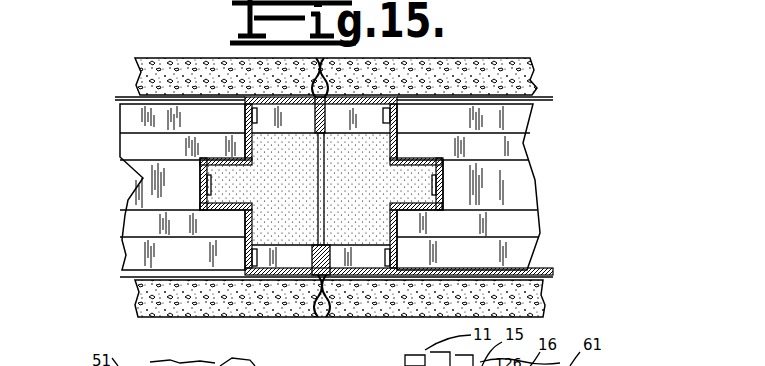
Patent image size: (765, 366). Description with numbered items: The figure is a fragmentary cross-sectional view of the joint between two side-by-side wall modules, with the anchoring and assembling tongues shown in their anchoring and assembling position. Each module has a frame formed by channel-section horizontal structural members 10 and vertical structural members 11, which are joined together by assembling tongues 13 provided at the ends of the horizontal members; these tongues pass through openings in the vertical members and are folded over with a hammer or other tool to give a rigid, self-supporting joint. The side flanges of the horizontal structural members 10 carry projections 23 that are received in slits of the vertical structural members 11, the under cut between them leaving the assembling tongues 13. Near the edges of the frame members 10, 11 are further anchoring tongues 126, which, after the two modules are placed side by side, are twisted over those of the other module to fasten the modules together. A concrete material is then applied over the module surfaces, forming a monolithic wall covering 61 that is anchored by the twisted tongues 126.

The horizontal structural member 10 is at (520, 121).
The vertical structural member 11 is at (403, 158).
The assembling tongue 13 is at (387, 120).
The projection 23 is at (340, 257).
The wall covering of concrete material 61 is at (478, 72).
The anchoring and assembling tongue 126 is at (318, 317).